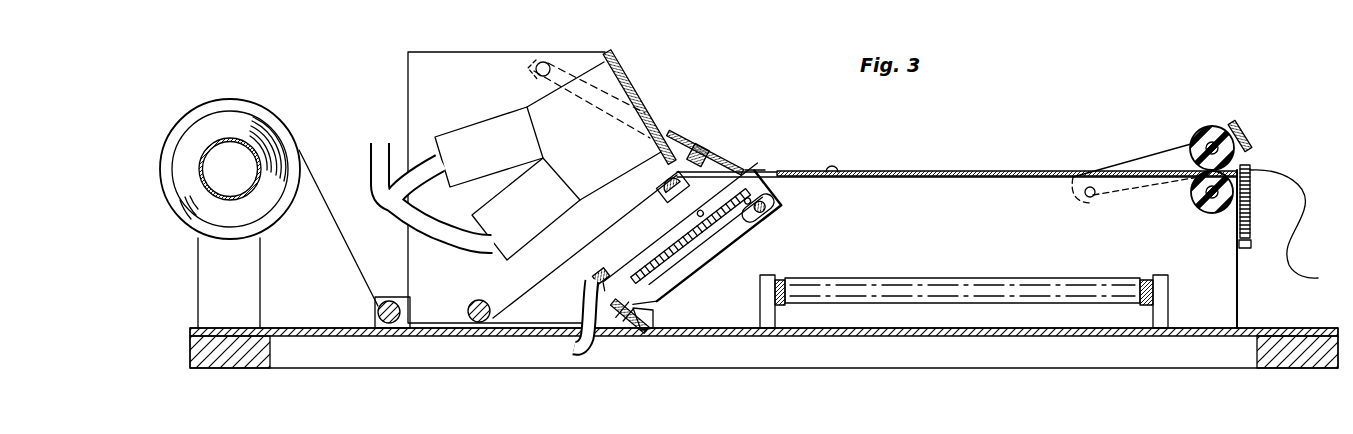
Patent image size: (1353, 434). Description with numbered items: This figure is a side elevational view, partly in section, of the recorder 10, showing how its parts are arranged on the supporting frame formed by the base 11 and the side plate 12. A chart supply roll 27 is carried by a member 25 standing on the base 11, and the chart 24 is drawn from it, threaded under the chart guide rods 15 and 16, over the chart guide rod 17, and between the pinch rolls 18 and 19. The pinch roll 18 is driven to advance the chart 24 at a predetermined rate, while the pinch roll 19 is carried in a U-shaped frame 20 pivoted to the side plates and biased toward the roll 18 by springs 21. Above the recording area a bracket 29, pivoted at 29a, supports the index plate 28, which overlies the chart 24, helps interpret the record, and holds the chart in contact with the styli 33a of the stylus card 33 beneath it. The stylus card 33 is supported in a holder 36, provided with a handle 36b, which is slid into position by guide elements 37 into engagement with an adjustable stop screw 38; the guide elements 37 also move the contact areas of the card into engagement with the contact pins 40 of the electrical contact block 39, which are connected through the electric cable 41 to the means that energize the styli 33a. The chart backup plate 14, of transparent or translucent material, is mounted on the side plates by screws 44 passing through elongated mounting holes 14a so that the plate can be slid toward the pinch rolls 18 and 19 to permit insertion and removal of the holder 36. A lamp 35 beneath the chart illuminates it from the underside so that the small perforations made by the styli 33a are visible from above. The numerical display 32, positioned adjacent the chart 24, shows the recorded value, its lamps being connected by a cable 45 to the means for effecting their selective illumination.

The recorder 10 is at (1050, 82).
The base 11 is at (950, 336).
The side plate 12 is at (408, 66).
The chart back-up plate 14 is at (977, 172).
The mounting holes 14a is at (1058, 172).
The chart guide rod 15 is at (389, 300).
The chart guide rod 16 is at (473, 306).
The chart guide rod 17 is at (664, 187).
The pinch roll 18 is at (1208, 213).
The pinch roll 19 is at (1197, 130).
The U-shaped frame 20 is at (1240, 133).
The springs 21 is at (1252, 203).
The chart 24 is at (304, 182).
The member 25 is at (198, 290).
The chart supply roll 27 is at (212, 105).
The index plate 28 is at (708, 148).
The bracket 29 is at (658, 128).
The pivot 29a is at (547, 61).
The numerical display 32 is at (458, 102).
The stylus card 33 is at (778, 186).
The styli 33a is at (748, 172).
The lamp 35 is at (988, 278).
The holder 36 is at (676, 253).
The handle 36b is at (759, 229).
The guide elements 37 is at (722, 264).
The adjustable stop screw 38 is at (653, 310).
The electrical contact block 39 is at (723, 190).
The contact pins 40 is at (594, 290).
The electric cable 41 is at (578, 311).
The screws 44 is at (842, 170).
The cable 45 is at (368, 172).